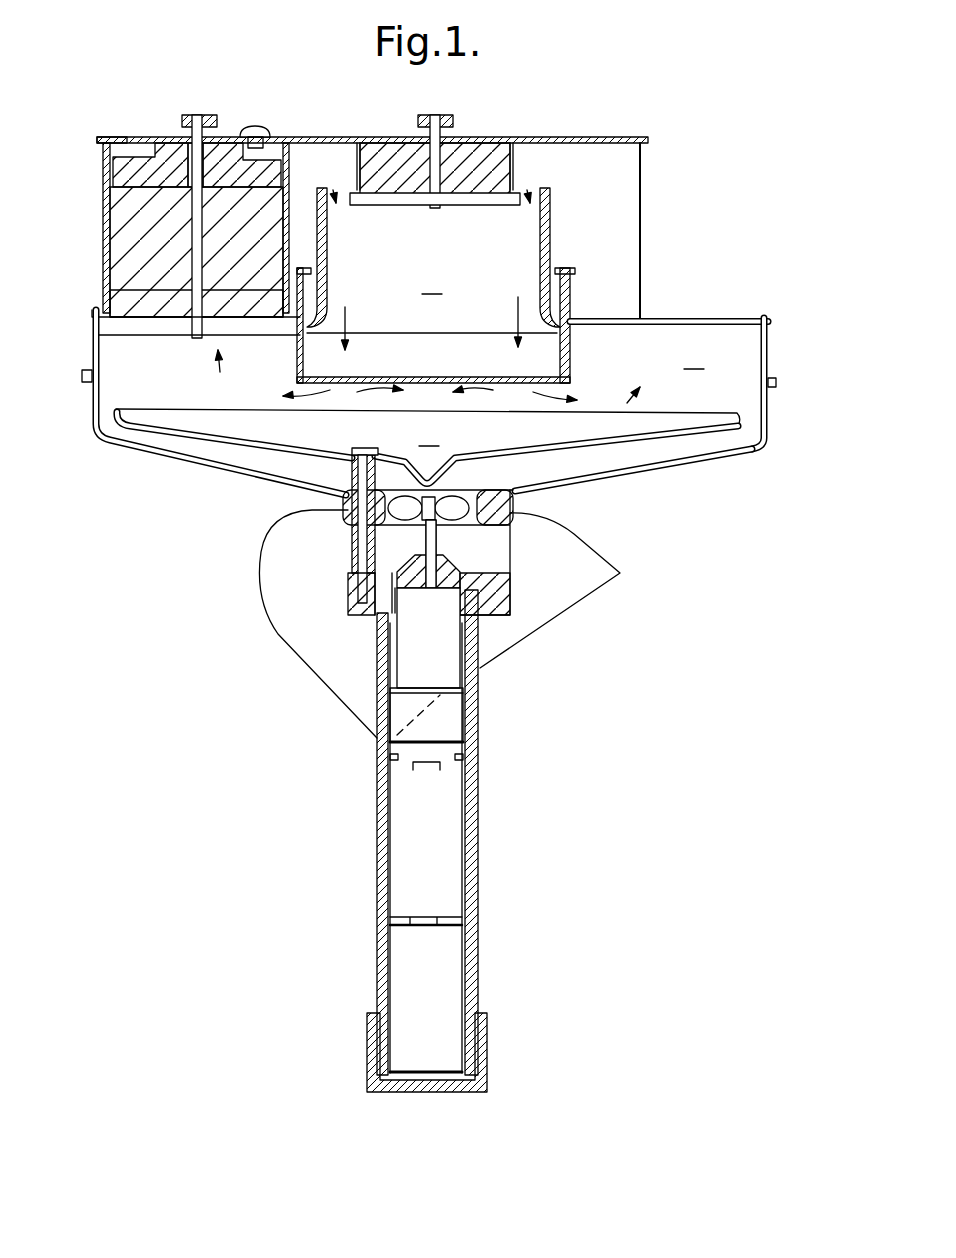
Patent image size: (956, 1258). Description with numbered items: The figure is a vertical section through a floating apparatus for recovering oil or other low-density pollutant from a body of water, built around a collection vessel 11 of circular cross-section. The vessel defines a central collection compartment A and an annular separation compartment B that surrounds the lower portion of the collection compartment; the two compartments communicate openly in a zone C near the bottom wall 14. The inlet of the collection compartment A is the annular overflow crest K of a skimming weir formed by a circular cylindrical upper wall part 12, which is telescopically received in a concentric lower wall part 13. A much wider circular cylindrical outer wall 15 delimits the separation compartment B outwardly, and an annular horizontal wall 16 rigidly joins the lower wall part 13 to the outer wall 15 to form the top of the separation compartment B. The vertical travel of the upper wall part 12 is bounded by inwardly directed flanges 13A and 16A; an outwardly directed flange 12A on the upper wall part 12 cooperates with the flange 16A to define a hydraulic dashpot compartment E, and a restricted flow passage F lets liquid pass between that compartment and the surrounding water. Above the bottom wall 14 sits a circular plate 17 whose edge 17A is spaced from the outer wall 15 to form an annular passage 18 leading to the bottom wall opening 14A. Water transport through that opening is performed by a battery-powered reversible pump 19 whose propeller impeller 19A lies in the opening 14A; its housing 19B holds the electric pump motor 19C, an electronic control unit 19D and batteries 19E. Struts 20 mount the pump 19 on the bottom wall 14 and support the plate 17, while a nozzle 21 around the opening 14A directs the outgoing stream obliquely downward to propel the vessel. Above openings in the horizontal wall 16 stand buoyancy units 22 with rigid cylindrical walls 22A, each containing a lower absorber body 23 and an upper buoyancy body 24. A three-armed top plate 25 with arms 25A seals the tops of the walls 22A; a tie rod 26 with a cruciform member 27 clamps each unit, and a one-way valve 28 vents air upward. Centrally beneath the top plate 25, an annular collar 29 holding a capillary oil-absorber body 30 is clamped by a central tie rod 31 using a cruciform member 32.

The collection vessel 11 is at (187, 460).
The upper wall part 12 is at (547, 207).
The outwardly directed annular flange 12A is at (557, 337).
The lower wall part 13 is at (568, 363).
The inwardly directed annular flange 13A is at (557, 383).
The bottom wall 14 is at (640, 472).
The bottom wall opening 14A is at (472, 512).
The outer wall 15 is at (768, 357).
The annular horizontal wall 16 is at (690, 318).
The inwardly directed annular flange 16A is at (117, 310).
The circular plate 17 is at (632, 435).
The circumferential edge 17A is at (737, 423).
The annular passage 18 is at (750, 420).
The reversible pump 19 is at (520, 585).
The impeller 19A is at (458, 510).
The housing 19B is at (470, 787).
The electric pump motor 19C is at (435, 657).
The electronic control unit 19D is at (442, 722).
The batteries 19E is at (443, 953).
The struts 20 is at (367, 540).
The nozzle 21 is at (280, 640).
The buoyancy units 22 is at (110, 247).
The rigid circular cylindrical wall 22A is at (103, 213).
The absorber body 23 is at (252, 298).
The buoyancy body 24 is at (123, 177).
The three-armed top plate 25 is at (310, 137).
The arms 25A is at (120, 134).
The tie rod 26 is at (192, 155).
The cruciform member 27 is at (212, 328).
The one-way valve 28 is at (252, 125).
The annular collar 29 is at (352, 166).
The capillary oil-absorber body 30 is at (480, 158).
The central tie rod 31 is at (427, 168).
The cruciform member 32 is at (485, 207).
The collection compartment A is at (431, 283).
The separation compartment B is at (693, 357).
The zone C is at (428, 435).
The annular overflow crest K is at (547, 182).
The flow passage F is at (555, 267).
The dashpot compartment E is at (557, 303).